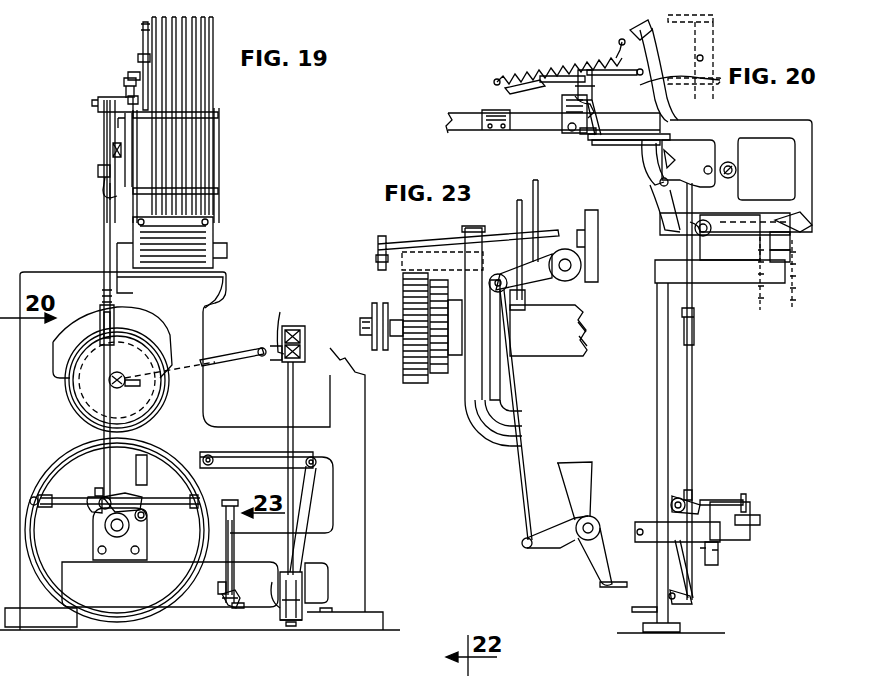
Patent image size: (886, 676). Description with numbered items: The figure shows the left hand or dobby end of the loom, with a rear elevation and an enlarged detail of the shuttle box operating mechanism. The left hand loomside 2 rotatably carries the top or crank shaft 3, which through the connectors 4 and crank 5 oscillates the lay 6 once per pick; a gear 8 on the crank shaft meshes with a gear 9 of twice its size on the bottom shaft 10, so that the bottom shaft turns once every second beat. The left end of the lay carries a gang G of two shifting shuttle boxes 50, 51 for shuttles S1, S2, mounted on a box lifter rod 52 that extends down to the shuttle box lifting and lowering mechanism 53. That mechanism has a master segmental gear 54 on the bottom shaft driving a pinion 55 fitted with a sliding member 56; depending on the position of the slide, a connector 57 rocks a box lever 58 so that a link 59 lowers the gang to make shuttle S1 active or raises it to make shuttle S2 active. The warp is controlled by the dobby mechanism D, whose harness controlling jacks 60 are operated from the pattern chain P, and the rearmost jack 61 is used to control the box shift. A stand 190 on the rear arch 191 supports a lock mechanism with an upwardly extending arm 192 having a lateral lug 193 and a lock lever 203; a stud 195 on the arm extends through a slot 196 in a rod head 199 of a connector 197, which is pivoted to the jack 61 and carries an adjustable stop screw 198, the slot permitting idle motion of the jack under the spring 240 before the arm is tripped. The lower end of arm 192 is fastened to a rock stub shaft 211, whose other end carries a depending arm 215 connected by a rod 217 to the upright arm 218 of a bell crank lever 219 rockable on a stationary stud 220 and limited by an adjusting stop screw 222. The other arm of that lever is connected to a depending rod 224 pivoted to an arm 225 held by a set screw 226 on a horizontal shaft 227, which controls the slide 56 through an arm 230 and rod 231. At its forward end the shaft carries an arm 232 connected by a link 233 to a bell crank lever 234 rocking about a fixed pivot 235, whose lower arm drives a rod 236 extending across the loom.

In FIG. 19, the harness controlling jacks 60 is at (208, 44).
In FIG. 19, the rearmost jack 61 is at (143, 26).
In FIG. 20, the rearmost jack 61 is at (665, 103).
In FIG. 19, the upwardly extending arm 192 is at (138, 58).
In FIG. 20, the upwardly extending arm 192 is at (592, 90).
In FIG. 19, the lock lever 203 is at (131, 74).
In FIG. 19, the stand 190 is at (124, 82).
In FIG. 20, the stand 190 is at (565, 130).
In FIG. 19, the lateral lug 193 is at (128, 98).
In FIG. 20, the lateral lug 193 is at (592, 102).
In FIG. 19, the rock stub shaft 211 is at (99, 104).
In FIG. 20, the rock stub shaft 211 is at (598, 124).
In FIG. 19, the depending arm 215 is at (109, 117).
In FIG. 20, the depending arm 215 is at (592, 140).
In FIG. 19, the rod 217 is at (125, 133).
In FIG. 20, the rod 217 is at (630, 140).
In FIG. 19, the upright arm 218 is at (113, 152).
In FIG. 20, the upright arm 218 is at (665, 155).
In FIG. 19, the stationary stud 220 is at (100, 170).
In FIG. 20, the stationary stud 220 is at (662, 185).
In FIG. 19, the adjusting stop screw 222 is at (118, 190).
In FIG. 20, the adjusting stop screw 222 is at (672, 157).
In FIG. 19, the depending rod 224 is at (104, 222).
In FIG. 23, the depending rod 224 is at (540, 196).
In FIG. 20, the depending rod 224 is at (692, 410).
In FIG. 19, the left hand loomside 2 is at (362, 494).
In FIG. 20, the left hand loomside 2 is at (660, 372).
In FIG. 19, the gear 8 is at (140, 342).
In FIG. 19, the top or crank shaft 3 is at (117, 372).
In FIG. 19, the crank 5 is at (135, 384).
In FIG. 19, the connectors 4 is at (232, 370).
In FIG. 19, the lay 6 is at (270, 360).
In FIG. 19, the shuttle S2 is at (286, 360).
In FIG. 19, the shuttle S1 is at (294, 328).
In FIG. 19, the gang G is at (286, 318).
In FIG. 19, the shuttle box 50 is at (302, 334).
In FIG. 19, the shuttle box 51 is at (303, 350).
In FIG. 19, the box lifter rod 52 is at (290, 402).
In FIG. 19, the box lever 58 is at (236, 468).
In FIG. 19, the link 59 is at (312, 485).
In FIG. 19, the shuttle box lifting and lowering mechanism 53 is at (300, 586).
In FIG. 19, the gear 9 is at (108, 592).
In FIG. 19, the bottom shaft 10 is at (122, 530).
In FIG. 23, the bottom shaft 10 is at (580, 320).
In FIG. 20, the bottom shaft 10 is at (728, 540).
In FIG. 19, the horizontal shaft 227 is at (68, 500).
In FIG. 23, the horizontal shaft 227 is at (572, 265).
In FIG. 20, the horizontal shaft 227 is at (672, 502).
In FIG. 19, the set screw 226 is at (97, 490).
In FIG. 19, the connector 57 is at (138, 470).
In FIG. 23, the connector 57 is at (518, 208).
In FIG. 19, the arm 225 is at (92, 505).
In FIG. 23, the arm 225 is at (560, 278).
In FIG. 20, the arm 225 is at (690, 498).
In FIG. 19, the arm 230 is at (108, 512).
In FIG. 23, the arm 230 is at (560, 240).
In FIG. 20, the arm 230 is at (676, 502).
In FIG. 19, the sliding member 56 is at (145, 517).
In FIG. 23, the sliding member 56 is at (374, 312).
In FIG. 19, the arm 232 is at (225, 503).
In FIG. 23, the arm 232 is at (520, 296).
In FIG. 19, the link 233 is at (236, 560).
In FIG. 23, the link 233 is at (525, 402).
In FIG. 20, the link 233 is at (695, 583).
In FIG. 19, the fixed pivot 235 is at (220, 588).
In FIG. 23, the fixed pivot 235 is at (590, 535).
In FIG. 19, the bell crank lever 234 is at (225, 598).
In FIG. 23, the bell crank lever 234 is at (552, 546).
In FIG. 20, the bell crank lever 234 is at (688, 603).
In FIG. 19, the rod 236 is at (238, 606).
In FIG. 23, the rod 236 is at (615, 584).
In FIG. 20, the rod 236 is at (643, 608).
In FIG. 23, the rod 231 is at (440, 243).
In FIG. 20, the rod 231 is at (715, 502).
In FIG. 23, the master segmental gear 54 is at (414, 382).
In FIG. 23, the pinion 55 is at (410, 358).
In FIG. 23, the slot 196 is at (397, 666).
In FIG. 23, the stud 195 is at (457, 675).
In FIG. 20, the stud 195 is at (590, 76).
In FIG. 23, the connector 197 is at (522, 666).
In FIG. 20, the connector 197 is at (645, 52).
In FIG. 20, the dobby mechanism D is at (760, 128).
In FIG. 20, the rear arch 191 is at (465, 125).
In FIG. 20, the spring 240 is at (605, 45).
In FIG. 20, the rod head 199 is at (538, 80).
In FIG. 20, the adjustable stop screw 198 is at (565, 76).
In FIG. 20, the bell crank lever 219 is at (655, 170).
In FIG. 20, the pattern chain P is at (762, 294).